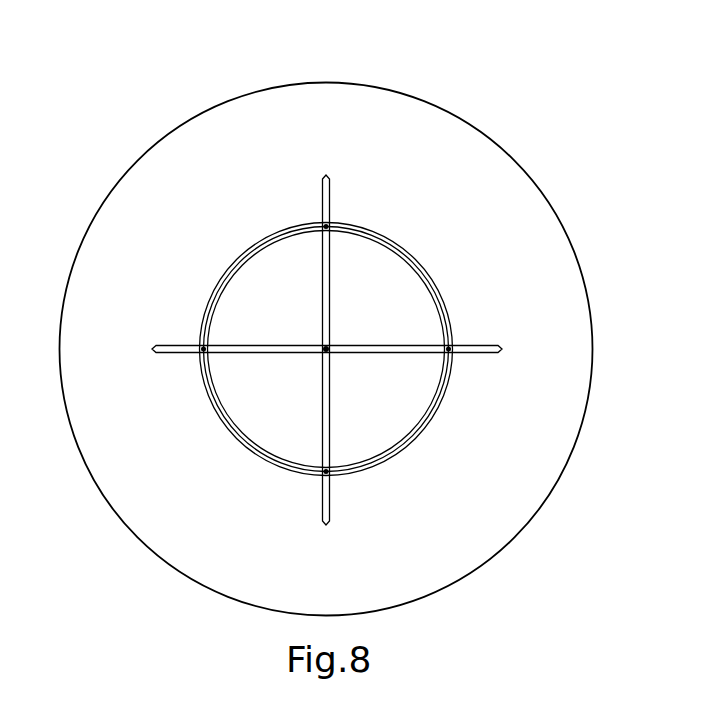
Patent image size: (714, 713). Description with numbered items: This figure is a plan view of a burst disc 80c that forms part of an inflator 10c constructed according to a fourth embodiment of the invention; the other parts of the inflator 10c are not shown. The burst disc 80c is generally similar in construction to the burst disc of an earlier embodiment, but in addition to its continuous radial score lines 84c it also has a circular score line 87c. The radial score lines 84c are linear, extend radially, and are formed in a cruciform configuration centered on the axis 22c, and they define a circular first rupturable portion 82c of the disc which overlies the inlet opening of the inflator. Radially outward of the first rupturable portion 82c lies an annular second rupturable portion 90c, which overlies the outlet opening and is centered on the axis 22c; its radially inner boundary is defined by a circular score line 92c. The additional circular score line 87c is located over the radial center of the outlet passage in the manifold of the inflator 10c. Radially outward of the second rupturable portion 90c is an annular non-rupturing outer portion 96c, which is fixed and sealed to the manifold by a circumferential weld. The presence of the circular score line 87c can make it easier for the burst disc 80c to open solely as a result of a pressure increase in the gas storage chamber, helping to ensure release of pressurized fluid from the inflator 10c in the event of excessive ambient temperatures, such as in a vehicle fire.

The inflator 10c is at (173, 67).
The burst disc 80c is at (97, 100).
The first rupturable portion 82c is at (357, 290).
The continuous radial score lines 84c is at (330, 342).
The circular score line 87c is at (243, 250).
The second rupturable portion 90c is at (233, 523).
The circular score line 92c is at (255, 383).
The non-rupturing outer portion 96c is at (393, 165).
The axis 22c is at (330, 352).